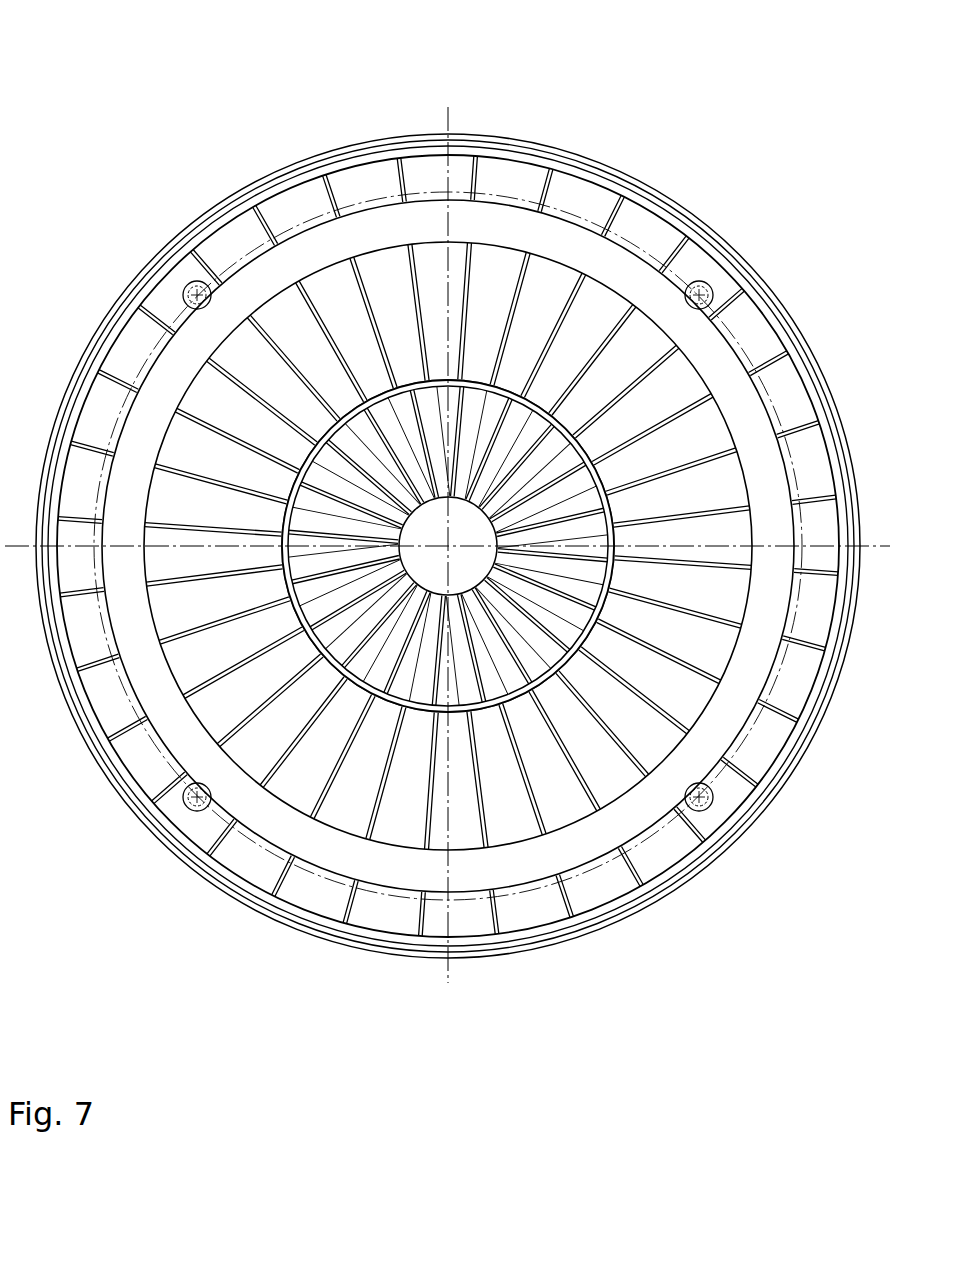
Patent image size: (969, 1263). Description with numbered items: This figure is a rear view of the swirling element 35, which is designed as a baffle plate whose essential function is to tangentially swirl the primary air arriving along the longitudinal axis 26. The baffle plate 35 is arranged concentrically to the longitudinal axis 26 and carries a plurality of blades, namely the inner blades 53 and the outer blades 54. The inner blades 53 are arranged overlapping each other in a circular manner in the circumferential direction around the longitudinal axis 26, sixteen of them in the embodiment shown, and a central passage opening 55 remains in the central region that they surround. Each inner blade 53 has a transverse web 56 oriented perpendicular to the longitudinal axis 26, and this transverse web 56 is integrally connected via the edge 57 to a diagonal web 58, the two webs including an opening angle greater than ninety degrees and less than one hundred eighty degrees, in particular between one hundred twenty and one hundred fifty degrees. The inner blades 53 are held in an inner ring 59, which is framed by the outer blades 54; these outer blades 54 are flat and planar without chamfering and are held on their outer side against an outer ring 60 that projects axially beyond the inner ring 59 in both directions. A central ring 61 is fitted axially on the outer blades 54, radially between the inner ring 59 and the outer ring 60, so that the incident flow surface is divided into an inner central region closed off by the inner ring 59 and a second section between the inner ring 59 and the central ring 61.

The longitudinal axis 26 is at (448, 560).
The swirling element 35 is at (392, 108).
The inner blades 53 is at (557, 633).
The outer blades 54 is at (376, 907).
The central passage opening 55 is at (448, 546).
The transverse web 56 is at (352, 395).
The edge 57 is at (353, 433).
The diagonal web 58 is at (323, 443).
The inner ring 59 is at (470, 387).
The outer ring 60 is at (613, 187).
The central ring 61 is at (558, 233).